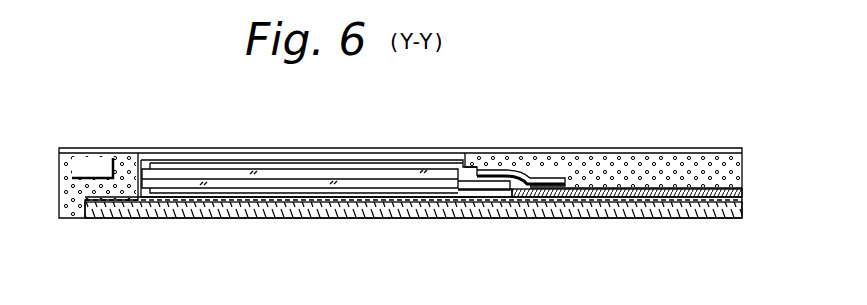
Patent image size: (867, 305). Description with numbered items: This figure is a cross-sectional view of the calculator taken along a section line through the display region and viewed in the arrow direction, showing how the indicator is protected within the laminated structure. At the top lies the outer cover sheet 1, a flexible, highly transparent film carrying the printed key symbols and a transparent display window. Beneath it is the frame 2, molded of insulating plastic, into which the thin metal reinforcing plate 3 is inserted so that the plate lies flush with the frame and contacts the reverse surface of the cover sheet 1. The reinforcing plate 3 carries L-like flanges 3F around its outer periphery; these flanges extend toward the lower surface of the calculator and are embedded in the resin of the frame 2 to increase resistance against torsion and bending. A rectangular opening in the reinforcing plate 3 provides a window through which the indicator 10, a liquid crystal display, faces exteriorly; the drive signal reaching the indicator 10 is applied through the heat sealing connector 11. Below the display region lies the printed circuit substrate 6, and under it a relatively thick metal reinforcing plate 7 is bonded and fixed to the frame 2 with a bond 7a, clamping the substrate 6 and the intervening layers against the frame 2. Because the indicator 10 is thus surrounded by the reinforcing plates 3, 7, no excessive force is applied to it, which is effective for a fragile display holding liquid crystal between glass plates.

The outer cover sheet 1 is at (614, 148).
The frame 2 is at (76, 165).
The reinforcing plate 3 is at (146, 158).
The flange 3F is at (96, 176).
The indicator 10 is at (300, 167).
The heat sealing connector 11 is at (492, 172).
The printed circuit substrate 6 is at (640, 189).
The reinforcing plate 7 is at (357, 208).
The bond 7a is at (494, 198).